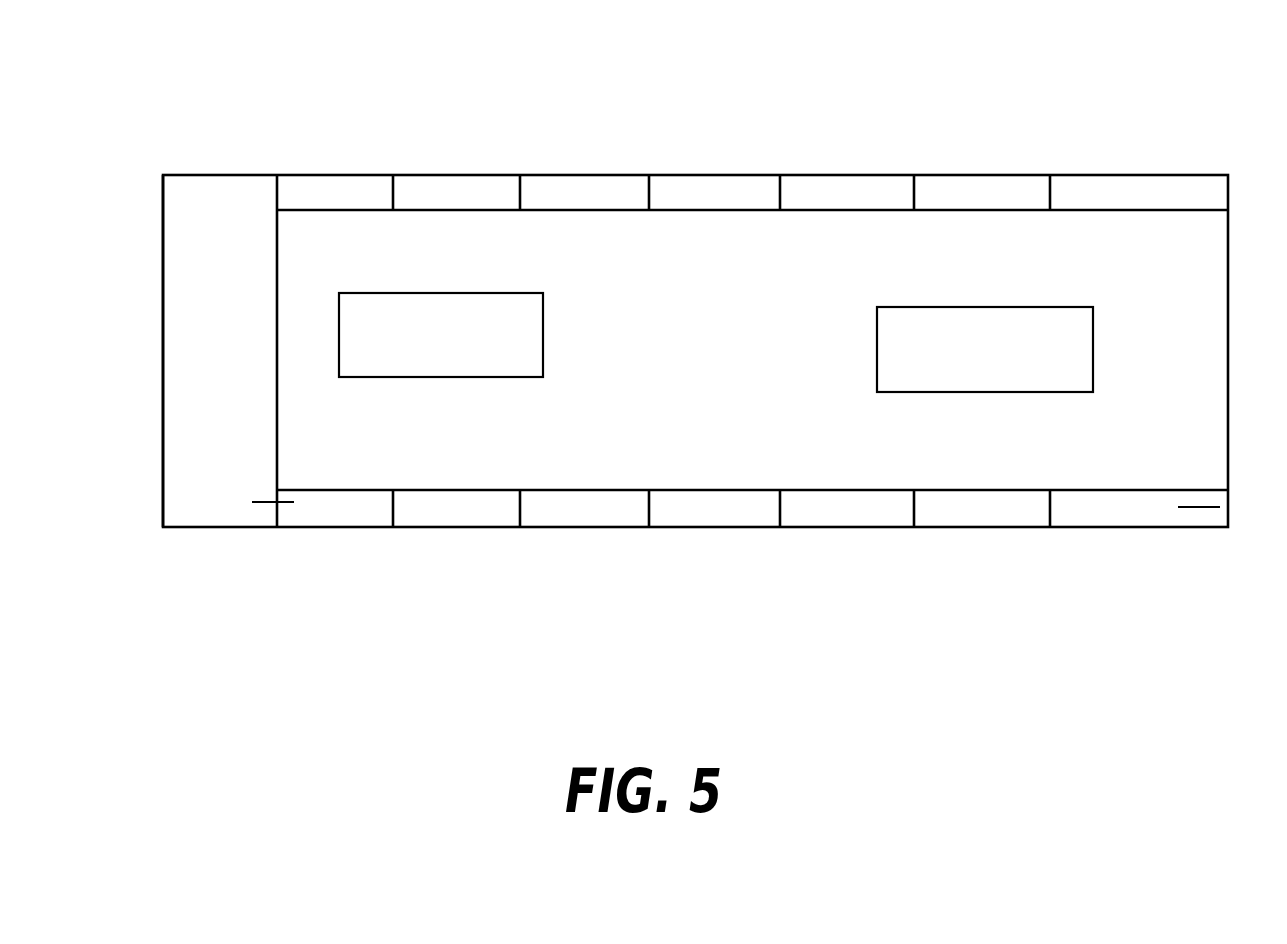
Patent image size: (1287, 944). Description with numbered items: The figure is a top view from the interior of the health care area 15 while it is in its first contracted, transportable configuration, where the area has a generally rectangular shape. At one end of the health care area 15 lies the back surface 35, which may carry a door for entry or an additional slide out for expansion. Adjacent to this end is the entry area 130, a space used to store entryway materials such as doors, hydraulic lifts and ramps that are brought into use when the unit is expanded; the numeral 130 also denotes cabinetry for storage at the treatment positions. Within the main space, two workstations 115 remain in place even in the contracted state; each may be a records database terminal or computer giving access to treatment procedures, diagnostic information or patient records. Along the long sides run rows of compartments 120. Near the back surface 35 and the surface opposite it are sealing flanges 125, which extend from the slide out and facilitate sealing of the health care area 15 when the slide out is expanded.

The health care area 15 is at (315, 122).
The back surface 35 is at (157, 340).
The workstation 115 is at (432, 337).
The cell 120 is at (471, 204).
The sealing flange 125 is at (272, 502).
The entry area 130 is at (232, 341).